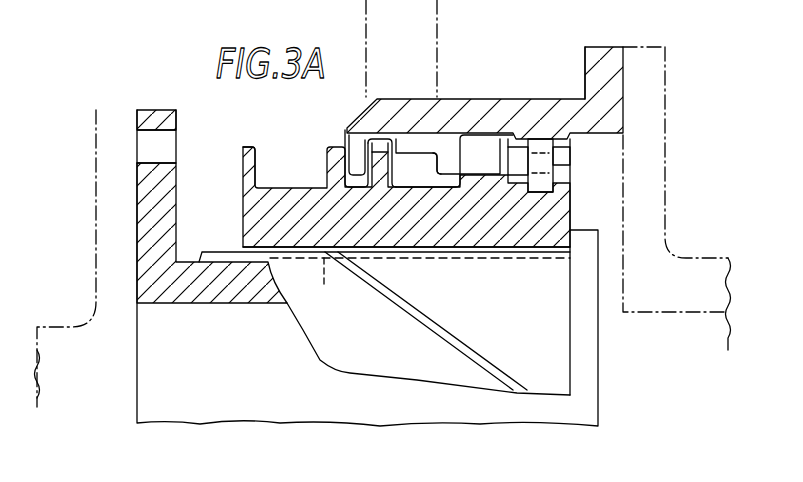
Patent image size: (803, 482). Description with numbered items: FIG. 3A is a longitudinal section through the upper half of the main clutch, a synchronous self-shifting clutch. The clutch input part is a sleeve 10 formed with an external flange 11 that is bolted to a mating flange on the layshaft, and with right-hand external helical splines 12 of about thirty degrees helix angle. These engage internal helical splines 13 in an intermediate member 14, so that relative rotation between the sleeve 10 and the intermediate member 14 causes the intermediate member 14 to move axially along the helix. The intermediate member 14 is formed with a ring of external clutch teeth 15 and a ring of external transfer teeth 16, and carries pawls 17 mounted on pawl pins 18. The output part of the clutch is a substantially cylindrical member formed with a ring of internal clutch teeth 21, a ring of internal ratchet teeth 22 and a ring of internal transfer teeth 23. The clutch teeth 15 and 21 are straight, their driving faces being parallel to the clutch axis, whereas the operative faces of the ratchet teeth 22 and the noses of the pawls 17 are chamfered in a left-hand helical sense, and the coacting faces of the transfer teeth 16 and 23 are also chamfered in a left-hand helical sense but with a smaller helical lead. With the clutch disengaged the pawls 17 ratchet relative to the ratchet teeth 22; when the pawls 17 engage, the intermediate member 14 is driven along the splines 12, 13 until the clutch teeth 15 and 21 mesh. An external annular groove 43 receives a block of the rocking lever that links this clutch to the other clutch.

The sleeve 10 is at (204, 296).
The external flange 11 is at (142, 208).
The external helical splines 12 is at (214, 251).
The internal helical splines 13 is at (326, 287).
The intermediate member 14 is at (406, 197).
The external clutch teeth 15 is at (490, 160).
The external transfer teeth 16 is at (372, 138).
The pawls 17 is at (572, 210).
The pawl pins 18 is at (557, 182).
The internal clutch teeth 21 is at (426, 167).
The internal ratchet teeth 22 is at (572, 141).
The internal transfer teeth 23 is at (357, 162).
The external annular groove 43 is at (262, 176).